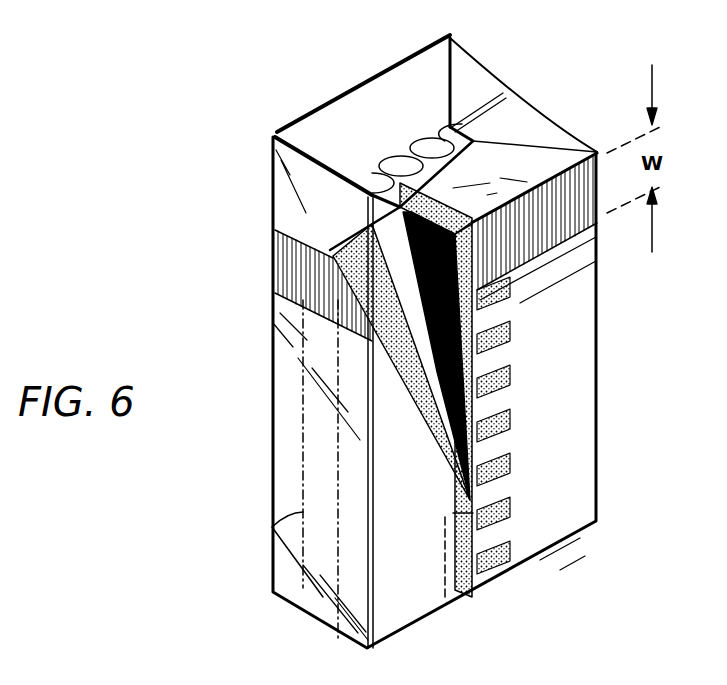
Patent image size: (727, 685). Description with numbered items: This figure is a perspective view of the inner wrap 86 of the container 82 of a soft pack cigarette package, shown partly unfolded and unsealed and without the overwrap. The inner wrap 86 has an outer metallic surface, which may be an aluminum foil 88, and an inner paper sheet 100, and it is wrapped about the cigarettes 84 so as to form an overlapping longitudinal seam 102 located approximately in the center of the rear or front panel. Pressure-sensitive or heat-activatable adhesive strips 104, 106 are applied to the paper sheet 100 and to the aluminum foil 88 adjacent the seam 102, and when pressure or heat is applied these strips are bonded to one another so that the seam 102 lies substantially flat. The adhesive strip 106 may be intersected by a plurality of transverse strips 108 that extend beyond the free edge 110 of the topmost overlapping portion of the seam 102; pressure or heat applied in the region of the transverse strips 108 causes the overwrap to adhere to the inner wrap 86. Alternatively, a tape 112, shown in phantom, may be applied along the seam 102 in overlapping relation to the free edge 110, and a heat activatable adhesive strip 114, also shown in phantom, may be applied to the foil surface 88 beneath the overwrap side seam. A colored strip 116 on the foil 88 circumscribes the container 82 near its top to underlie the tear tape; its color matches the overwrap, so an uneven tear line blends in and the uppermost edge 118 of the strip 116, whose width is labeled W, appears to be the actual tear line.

The container 82 is at (630, 314).
The cigarettes 84 is at (426, 148).
The inner wrap 86 is at (614, 367).
The aluminum foil 88 is at (468, 90).
The paper sheet 100 is at (323, 137).
The longitudinal seam 102 is at (542, 407).
The adhesive strip 104 is at (432, 412).
The adhesive strip 106 is at (465, 328).
The transverse strips 108 is at (503, 536).
The free edge 110 is at (452, 474).
The tape 112 is at (493, 587).
The heat activatable adhesive strip 114 is at (270, 528).
The colored strip 116 is at (285, 268).
The uppermost edge 118 is at (284, 222).